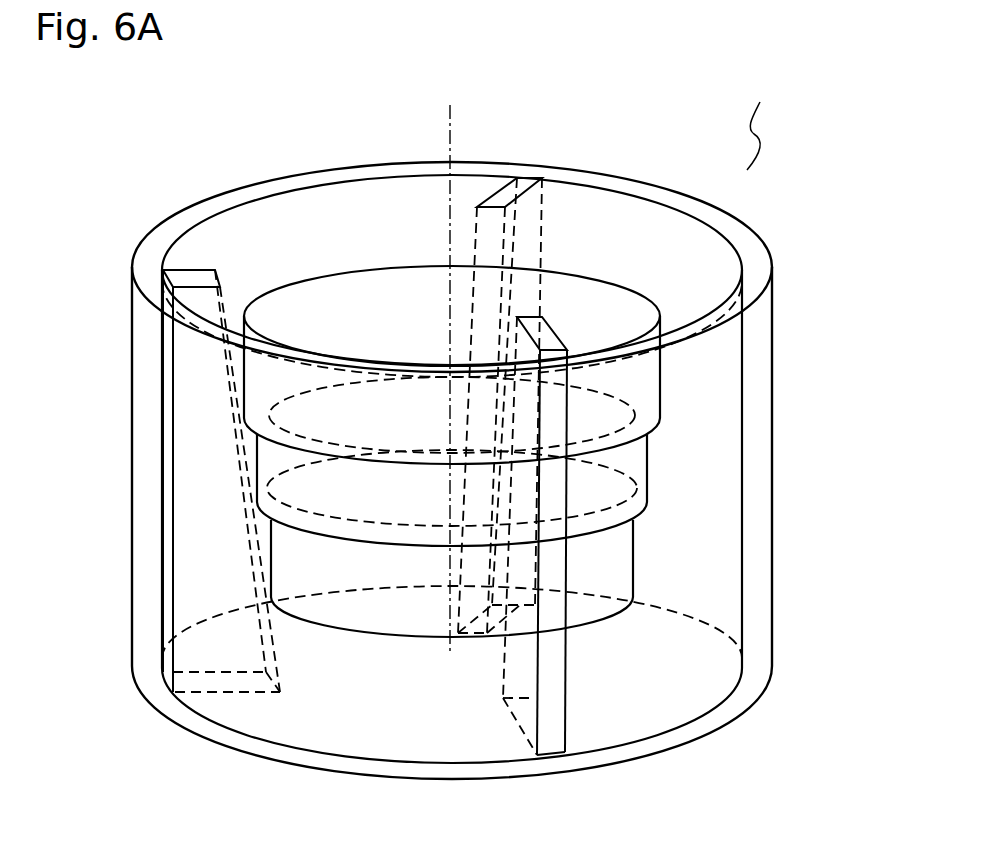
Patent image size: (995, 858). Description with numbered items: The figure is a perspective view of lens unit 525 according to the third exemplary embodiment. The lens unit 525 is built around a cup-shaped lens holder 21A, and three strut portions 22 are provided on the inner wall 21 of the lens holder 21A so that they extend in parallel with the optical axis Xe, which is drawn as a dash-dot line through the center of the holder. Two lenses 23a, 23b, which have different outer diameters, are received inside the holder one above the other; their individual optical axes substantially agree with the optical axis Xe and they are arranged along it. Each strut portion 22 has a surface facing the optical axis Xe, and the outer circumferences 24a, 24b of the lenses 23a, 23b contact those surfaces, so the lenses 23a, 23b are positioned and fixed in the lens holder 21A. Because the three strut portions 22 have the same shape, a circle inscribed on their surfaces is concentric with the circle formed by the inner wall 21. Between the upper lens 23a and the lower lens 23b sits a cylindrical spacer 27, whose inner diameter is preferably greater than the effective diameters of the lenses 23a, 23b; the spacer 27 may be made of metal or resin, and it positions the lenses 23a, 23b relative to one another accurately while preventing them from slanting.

The inner wall 21 is at (638, 228).
The lens holder 21A is at (755, 342).
The strut portion 22 is at (202, 603).
The lens 23a is at (637, 378).
The lens 23b is at (615, 565).
The outer circumference 24a is at (260, 375).
The outer circumference 24b is at (282, 555).
The cylindrical spacer 27 is at (275, 460).
The lens unit 525 is at (770, 121).
The optical axis Xe is at (445, 138).